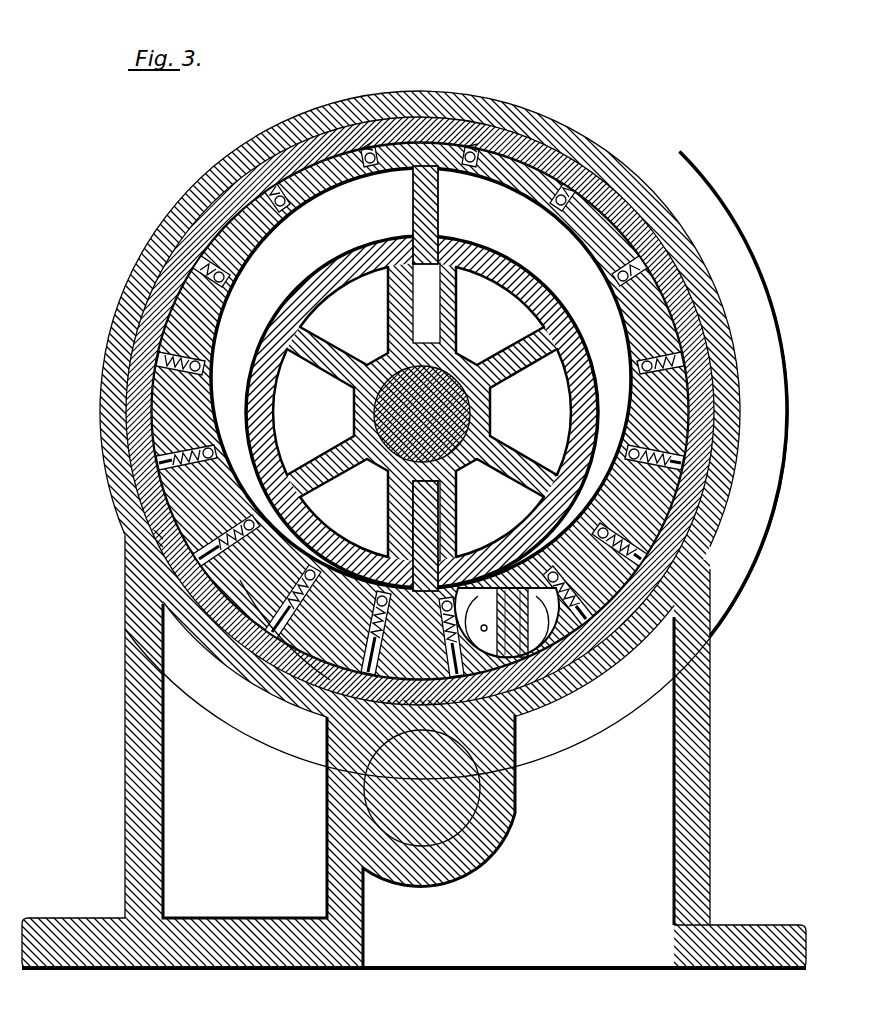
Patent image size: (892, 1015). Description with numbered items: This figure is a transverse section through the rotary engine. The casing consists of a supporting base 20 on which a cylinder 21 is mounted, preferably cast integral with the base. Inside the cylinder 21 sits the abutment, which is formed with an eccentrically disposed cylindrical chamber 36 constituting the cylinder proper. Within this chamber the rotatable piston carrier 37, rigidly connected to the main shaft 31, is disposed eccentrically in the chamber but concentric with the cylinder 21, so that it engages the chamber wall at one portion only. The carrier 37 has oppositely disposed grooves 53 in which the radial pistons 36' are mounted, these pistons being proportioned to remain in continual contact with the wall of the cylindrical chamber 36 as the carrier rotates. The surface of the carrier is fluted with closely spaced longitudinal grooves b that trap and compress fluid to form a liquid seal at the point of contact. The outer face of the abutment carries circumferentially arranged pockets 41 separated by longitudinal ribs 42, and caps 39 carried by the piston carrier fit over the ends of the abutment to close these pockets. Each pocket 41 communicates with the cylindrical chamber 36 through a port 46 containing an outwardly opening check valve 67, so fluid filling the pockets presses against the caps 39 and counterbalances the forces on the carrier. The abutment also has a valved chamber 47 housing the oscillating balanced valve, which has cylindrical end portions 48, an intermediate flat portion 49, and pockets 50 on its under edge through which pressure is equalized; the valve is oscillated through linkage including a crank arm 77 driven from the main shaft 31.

The supporting base 20 is at (245, 966).
The cylinder 21 is at (660, 226).
The main shaft 31 is at (450, 428).
The cylindrical chamber 36 is at (482, 210).
The radial pistons 36' is at (446, 507).
The rotatable piston carrier 37 is at (550, 298).
The caps 39 is at (612, 190).
The pockets 41 is at (287, 657).
The ribs 42 is at (233, 600).
The port 46 is at (155, 358).
The valved chamber 47 is at (484, 617).
The cylindrical end portions 48 is at (597, 673).
The intermediate flat portion 49 is at (540, 690).
The pockets 50 is at (533, 717).
The grooves 53 is at (425, 305).
The check valve 67 is at (222, 285).
The crank arm 77 is at (430, 818).
The flutes or grooves b is at (297, 256).